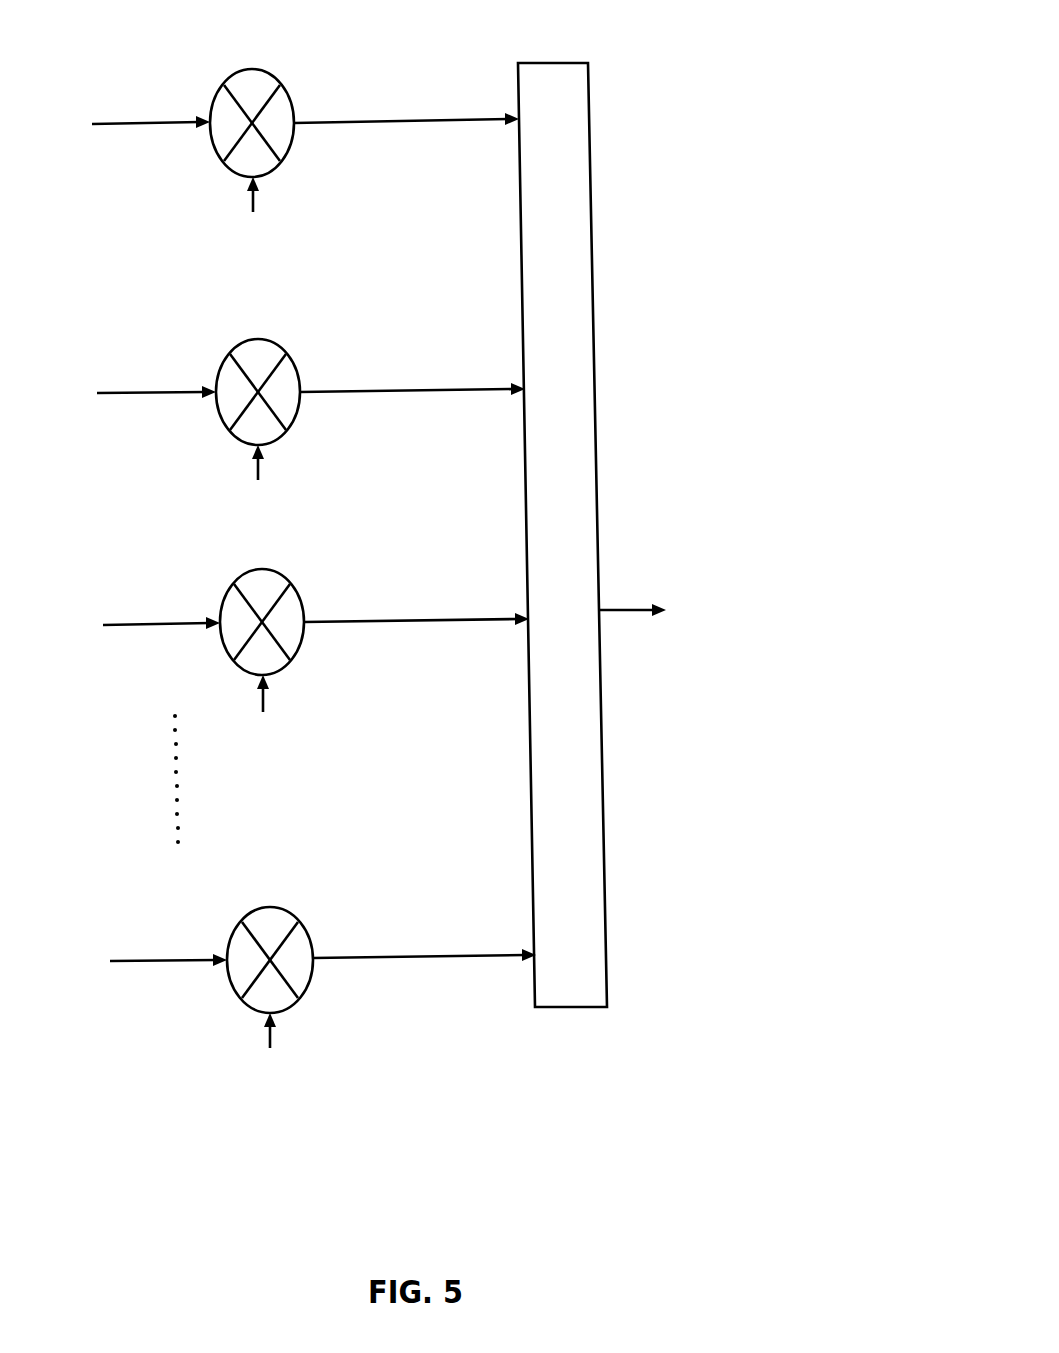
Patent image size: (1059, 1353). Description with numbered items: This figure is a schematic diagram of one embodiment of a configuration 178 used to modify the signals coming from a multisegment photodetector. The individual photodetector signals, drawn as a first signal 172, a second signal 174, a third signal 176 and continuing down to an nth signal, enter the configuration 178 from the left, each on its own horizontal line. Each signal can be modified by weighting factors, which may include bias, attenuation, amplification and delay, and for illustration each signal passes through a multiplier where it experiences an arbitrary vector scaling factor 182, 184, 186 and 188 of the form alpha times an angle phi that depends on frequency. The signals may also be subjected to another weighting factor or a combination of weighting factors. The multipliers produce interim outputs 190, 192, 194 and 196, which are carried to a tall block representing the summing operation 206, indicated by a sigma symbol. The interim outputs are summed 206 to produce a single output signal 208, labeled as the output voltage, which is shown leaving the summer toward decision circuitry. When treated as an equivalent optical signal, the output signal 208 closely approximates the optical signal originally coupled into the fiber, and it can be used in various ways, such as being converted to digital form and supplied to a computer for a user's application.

The signal V1 172 is at (148, 123).
The signal V2 174 is at (151, 392).
The signal V3 176 is at (153, 623).
The configuration 178 is at (125, 959).
The vector scaling factor 182 is at (250, 185).
The vector scaling factor 184 is at (255, 463).
The vector scaling factor 186 is at (260, 702).
The vector scaling factor 188 is at (267, 1019).
The interim output 190 is at (395, 121).
The interim output 192 is at (365, 389).
The interim output 194 is at (377, 619).
The interim output 196 is at (377, 955).
The summing 206 is at (593, 187).
The output signal 208 is at (636, 610).